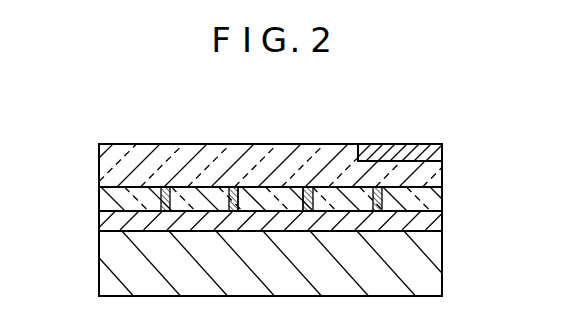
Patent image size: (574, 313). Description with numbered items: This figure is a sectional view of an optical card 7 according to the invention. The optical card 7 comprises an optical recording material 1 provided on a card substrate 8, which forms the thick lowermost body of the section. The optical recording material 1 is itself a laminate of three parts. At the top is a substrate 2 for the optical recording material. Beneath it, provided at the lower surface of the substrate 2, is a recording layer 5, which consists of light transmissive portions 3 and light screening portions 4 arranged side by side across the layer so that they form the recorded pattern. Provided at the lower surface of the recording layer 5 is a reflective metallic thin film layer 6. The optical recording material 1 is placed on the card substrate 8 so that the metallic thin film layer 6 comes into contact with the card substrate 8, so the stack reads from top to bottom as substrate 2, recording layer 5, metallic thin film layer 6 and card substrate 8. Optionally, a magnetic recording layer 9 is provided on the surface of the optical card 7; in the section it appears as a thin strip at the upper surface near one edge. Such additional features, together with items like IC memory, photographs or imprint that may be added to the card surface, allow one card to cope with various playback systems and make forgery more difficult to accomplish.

The optical recording material 1 is at (271, 172).
The substrate 2 is at (434, 175).
The light transmissive portions 3 is at (264, 197).
The light screening portions 4 is at (318, 192).
The recording layer 5 is at (290, 160).
The reflective metallic thin film layer 6 is at (434, 226).
The optical card 7 is at (228, 114).
The card substrate 8 is at (434, 273).
The magnetic recording layer 9 is at (398, 145).